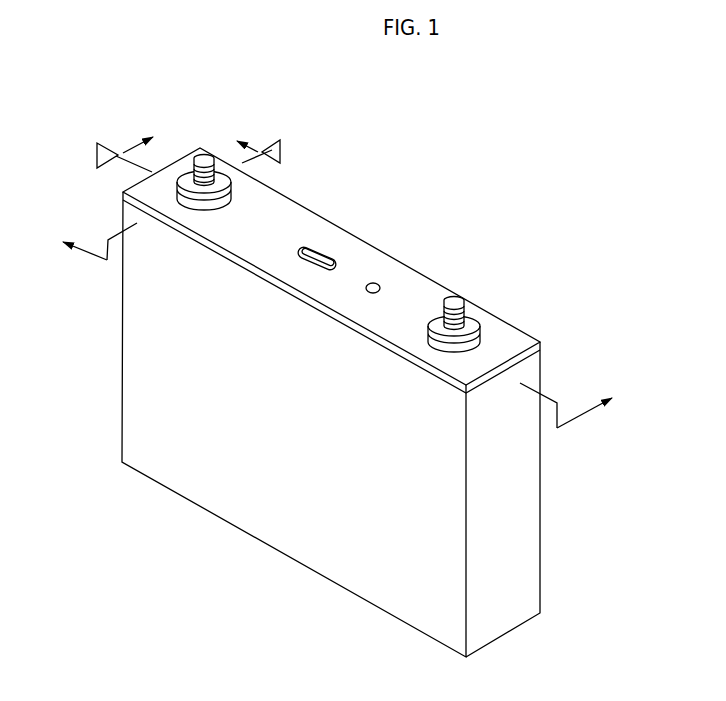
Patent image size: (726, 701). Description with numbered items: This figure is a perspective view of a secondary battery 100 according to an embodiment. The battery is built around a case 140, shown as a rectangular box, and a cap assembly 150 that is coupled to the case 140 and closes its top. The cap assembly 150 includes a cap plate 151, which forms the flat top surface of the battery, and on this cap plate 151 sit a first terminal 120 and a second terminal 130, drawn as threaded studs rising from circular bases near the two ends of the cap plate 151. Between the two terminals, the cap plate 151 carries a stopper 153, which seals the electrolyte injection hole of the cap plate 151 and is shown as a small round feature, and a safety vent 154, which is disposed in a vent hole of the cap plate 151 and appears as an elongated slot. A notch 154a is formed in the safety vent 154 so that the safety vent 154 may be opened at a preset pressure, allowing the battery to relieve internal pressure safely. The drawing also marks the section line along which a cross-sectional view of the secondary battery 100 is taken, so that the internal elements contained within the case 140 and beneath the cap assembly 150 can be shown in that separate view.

The secondary battery 100 is at (85, 110).
The first terminal 120 is at (199, 148).
The second terminal 130 is at (466, 296).
The case 140 is at (128, 340).
The cap assembly 150 is at (331, 268).
The cap plate 151 is at (280, 212).
The stopper 153 is at (378, 283).
The safety vent 154 is at (356, 220).
The notch 154a is at (326, 258).